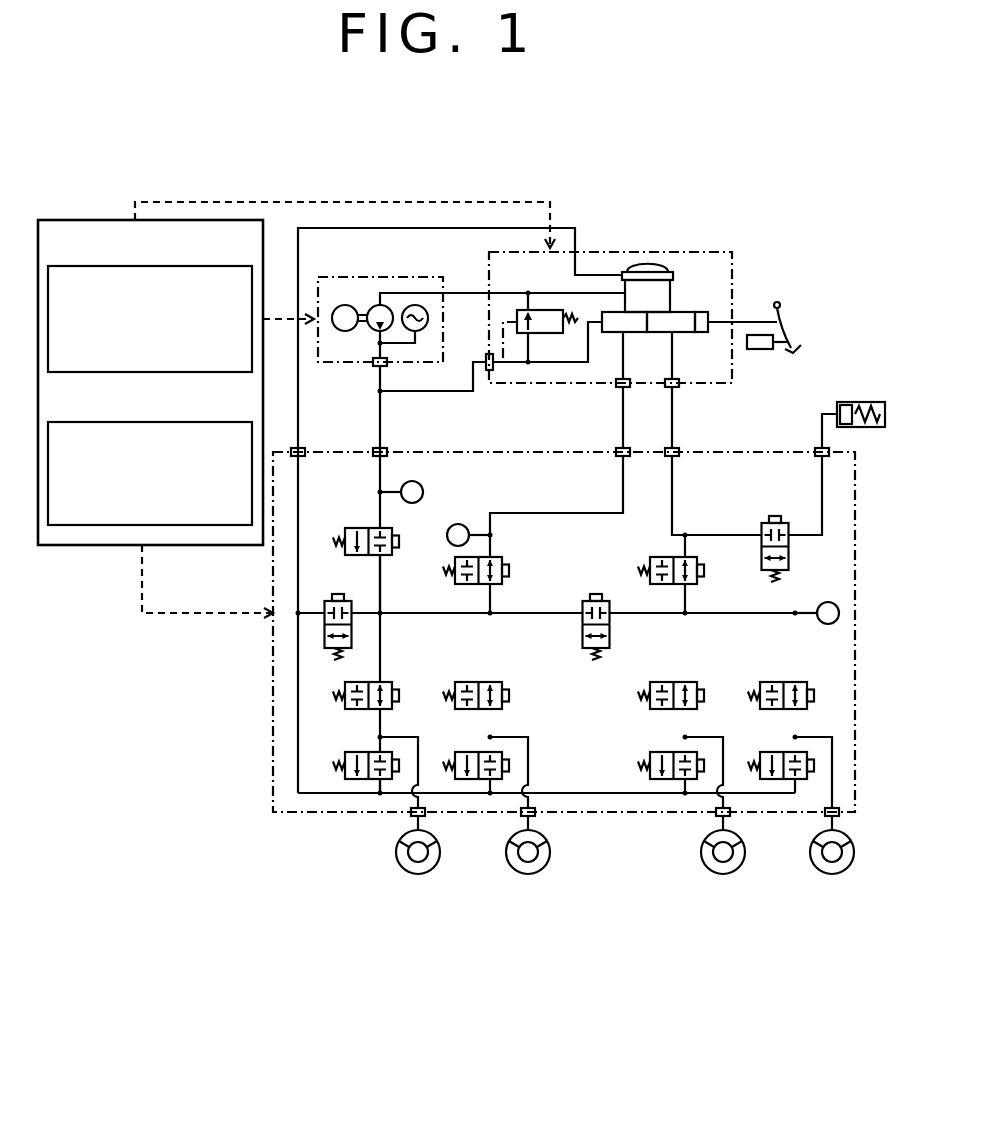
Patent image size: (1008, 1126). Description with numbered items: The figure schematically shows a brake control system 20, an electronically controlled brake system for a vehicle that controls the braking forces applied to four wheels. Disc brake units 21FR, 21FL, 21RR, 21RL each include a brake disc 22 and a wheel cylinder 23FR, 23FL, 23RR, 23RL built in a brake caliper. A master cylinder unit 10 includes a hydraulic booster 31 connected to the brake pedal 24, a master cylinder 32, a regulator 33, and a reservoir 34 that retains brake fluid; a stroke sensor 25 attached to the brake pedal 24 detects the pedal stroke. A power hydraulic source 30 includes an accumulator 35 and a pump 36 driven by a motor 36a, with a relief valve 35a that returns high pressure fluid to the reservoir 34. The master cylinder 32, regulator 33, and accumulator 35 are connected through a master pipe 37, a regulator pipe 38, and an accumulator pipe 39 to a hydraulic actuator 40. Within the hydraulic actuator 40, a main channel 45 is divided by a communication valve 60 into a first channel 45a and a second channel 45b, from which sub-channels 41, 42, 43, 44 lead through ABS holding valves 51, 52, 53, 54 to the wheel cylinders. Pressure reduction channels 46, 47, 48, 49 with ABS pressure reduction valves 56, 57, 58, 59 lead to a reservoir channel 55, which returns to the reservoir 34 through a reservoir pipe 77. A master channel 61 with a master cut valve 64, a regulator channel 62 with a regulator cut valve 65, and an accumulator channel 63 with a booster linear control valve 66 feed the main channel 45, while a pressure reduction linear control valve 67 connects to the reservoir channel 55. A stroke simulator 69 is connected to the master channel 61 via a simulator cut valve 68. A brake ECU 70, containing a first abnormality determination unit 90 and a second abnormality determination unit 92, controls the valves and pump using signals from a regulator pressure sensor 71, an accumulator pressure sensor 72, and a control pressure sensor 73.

The master cylinder unit 10 is at (610, 286).
The brake control system 20 is at (770, 199).
The disc brake unit 21RR is at (392, 869).
The disc brake unit 21RL is at (503, 869).
The disc brake unit 21FR is at (698, 869).
The disc brake unit 21FL is at (810, 869).
The brake disc 22 is at (413, 875).
The wheel cylinder 23RR is at (399, 845).
The wheel cylinder 23RL is at (548, 845).
The wheel cylinder 23FR is at (704, 838).
The wheel cylinder 23FL is at (826, 836).
The brake pedal 24 is at (800, 343).
The stroke sensor 25 is at (757, 350).
The power hydraulic source 30 is at (468, 313).
The hydraulic booster 31 is at (703, 312).
The master cylinder 32 is at (656, 333).
The regulator 33 is at (615, 333).
The reservoir 34 is at (648, 262).
The accumulator 35 is at (420, 331).
The relief valve 35a is at (550, 335).
The pump 36 is at (372, 331).
The motor 36a is at (344, 305).
The master pipe 37 is at (674, 420).
The regulator pipe 38 is at (622, 420).
The accumulator pipe 39 is at (382, 412).
The hydraulic actuator 40 is at (840, 452).
The sub-channel 41 is at (692, 735).
The sub-channel 42 is at (805, 735).
The sub-channel 43 is at (393, 723).
The sub-channel 44 is at (498, 735).
The main channel 45 is at (546, 618).
The first channel 45a is at (701, 615).
The second channel 45b is at (404, 616).
The pressure reduction channel 46 is at (686, 745).
The pressure reduction channel 47 is at (796, 745).
The pressure reduction channel 48 is at (381, 745).
The pressure reduction channel 49 is at (491, 745).
The ABS holding valve 51 is at (706, 672).
The ABS holding valve 52 is at (816, 672).
The ABS holding valve 53 is at (400, 672).
The ABS holding valve 54 is at (501, 682).
The reservoir channel 55 is at (323, 793).
The ABS pressure reduction valve 56 is at (652, 758).
The ABS pressure reduction valve 57 is at (762, 755).
The ABS pressure reduction valve 58 is at (345, 758).
The ABS pressure reduction valve 59 is at (457, 755).
The communication valve 60 is at (612, 646).
The master channel 61 is at (672, 525).
The regulator channel 62 is at (596, 512).
The accumulator channel 63 is at (382, 594).
The master cut valve 64 is at (700, 566).
The regulator cut valve 65 is at (518, 552).
The booster linear control valve 66 is at (395, 551).
The pressure reduction linear control valve 67 is at (337, 594).
The simulator cut valve 68 is at (790, 560).
The stroke simulator 69 is at (862, 402).
The brake ECU 70 is at (108, 220).
The regulator pressure sensor 71 is at (456, 524).
The accumulator pressure sensor 72 is at (421, 484).
The control pressure sensor 73 is at (829, 602).
The reservoir pipe 77 is at (300, 409).
The first abnormality determination unit 90 is at (163, 372).
The second abnormality determination unit 92 is at (195, 525).